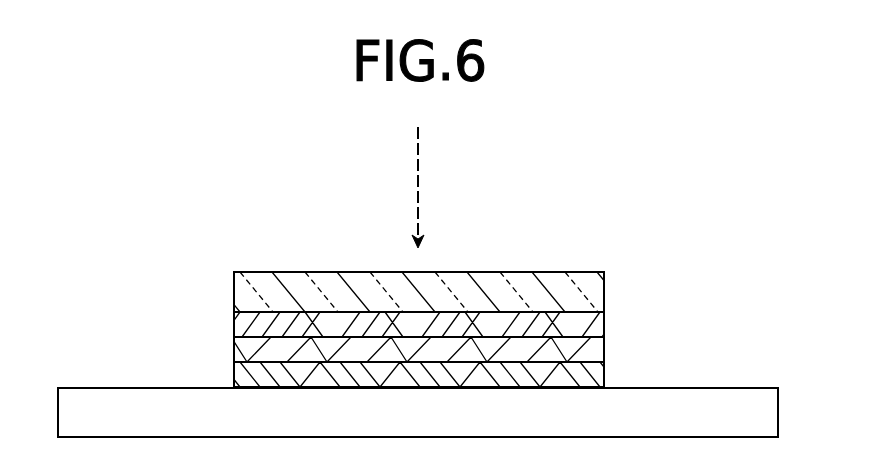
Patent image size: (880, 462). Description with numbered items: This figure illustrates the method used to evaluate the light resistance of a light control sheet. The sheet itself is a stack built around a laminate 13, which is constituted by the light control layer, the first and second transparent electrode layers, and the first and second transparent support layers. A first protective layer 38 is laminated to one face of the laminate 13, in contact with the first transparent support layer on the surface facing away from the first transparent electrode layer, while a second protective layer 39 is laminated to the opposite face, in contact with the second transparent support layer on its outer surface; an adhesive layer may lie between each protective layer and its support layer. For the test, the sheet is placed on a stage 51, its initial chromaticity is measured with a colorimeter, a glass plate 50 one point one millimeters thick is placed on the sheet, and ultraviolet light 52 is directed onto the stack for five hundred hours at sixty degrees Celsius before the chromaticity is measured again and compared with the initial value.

The glass plate 50 is at (778, 412).
The stage 51 is at (605, 292).
The second protective layer 39 is at (233, 321).
The laminate 13 is at (605, 352).
The first protective layer 38 is at (233, 373).
The ultraviolet light 52 is at (418, 188).